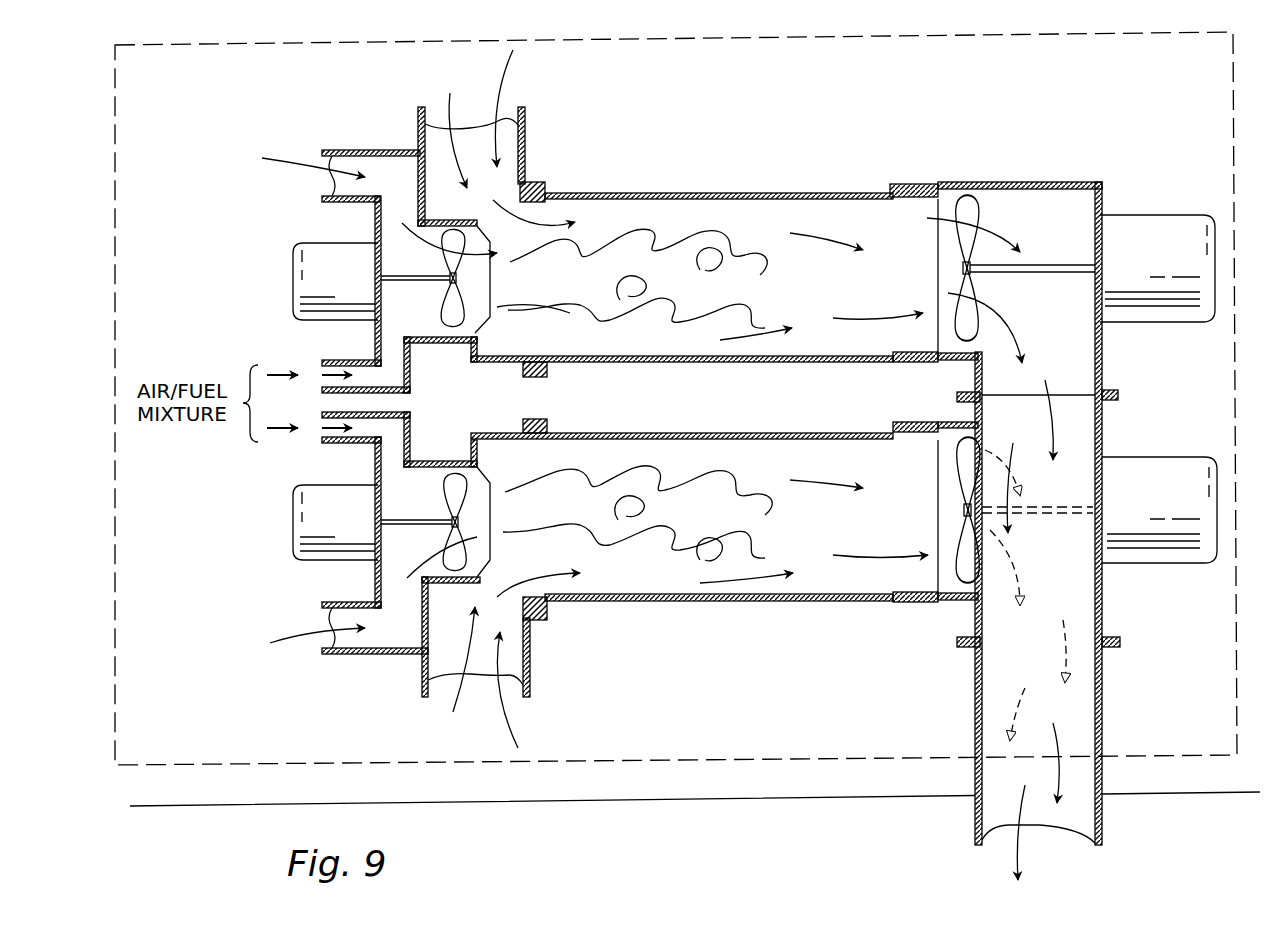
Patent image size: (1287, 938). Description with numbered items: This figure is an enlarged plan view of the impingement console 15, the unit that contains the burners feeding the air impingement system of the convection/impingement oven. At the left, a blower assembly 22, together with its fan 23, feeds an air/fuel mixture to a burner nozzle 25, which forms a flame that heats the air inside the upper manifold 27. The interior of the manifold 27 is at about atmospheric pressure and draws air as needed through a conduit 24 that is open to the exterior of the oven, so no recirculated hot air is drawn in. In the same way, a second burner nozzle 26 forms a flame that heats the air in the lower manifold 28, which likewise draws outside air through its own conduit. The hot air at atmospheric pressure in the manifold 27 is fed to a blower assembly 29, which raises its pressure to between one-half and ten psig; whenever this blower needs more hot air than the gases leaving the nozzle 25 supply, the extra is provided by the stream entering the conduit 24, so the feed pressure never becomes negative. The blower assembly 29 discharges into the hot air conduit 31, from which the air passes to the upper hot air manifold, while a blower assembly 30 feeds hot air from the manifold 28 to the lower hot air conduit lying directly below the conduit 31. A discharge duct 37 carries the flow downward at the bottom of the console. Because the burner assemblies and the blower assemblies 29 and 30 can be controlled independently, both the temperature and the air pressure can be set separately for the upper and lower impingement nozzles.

The impingement console 15 is at (1048, 30).
The blower assembly 22 is at (332, 245).
The burner assembly fan 23 is at (450, 306).
The conduit 24 is at (430, 122).
The burner nozzle 25 is at (490, 320).
The burner nozzle 26 is at (490, 485).
The manifold 27 is at (800, 213).
The manifold 28 is at (835, 580).
The blower assembly 29 is at (962, 205).
The blower assembly 30 is at (957, 425).
The hot air conduit 31 is at (1070, 348).
The exhaust duct 37 is at (1082, 842).